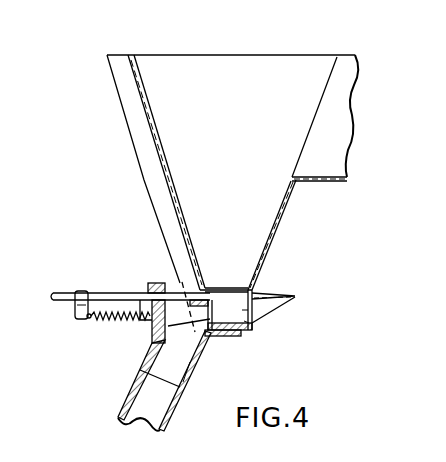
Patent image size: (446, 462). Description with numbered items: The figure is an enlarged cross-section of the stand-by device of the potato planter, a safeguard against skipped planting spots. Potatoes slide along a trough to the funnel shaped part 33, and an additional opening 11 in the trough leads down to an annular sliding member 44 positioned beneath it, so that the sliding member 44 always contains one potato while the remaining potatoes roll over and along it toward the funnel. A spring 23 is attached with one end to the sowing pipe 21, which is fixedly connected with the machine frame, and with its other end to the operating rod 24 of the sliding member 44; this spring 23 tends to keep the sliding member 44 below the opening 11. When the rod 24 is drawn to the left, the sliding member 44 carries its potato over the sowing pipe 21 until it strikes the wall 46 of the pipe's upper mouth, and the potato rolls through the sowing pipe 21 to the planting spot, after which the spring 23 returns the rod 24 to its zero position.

The funnel shaped part 33 is at (170, 121).
The additional opening 11 is at (238, 288).
The operating rod 24 is at (73, 292).
The spring 23 is at (117, 318).
The wall of the upper mouth of the sowing pipe 46 is at (173, 283).
The annular sliding member 44 is at (252, 318).
The sowing pipe 21 is at (163, 402).